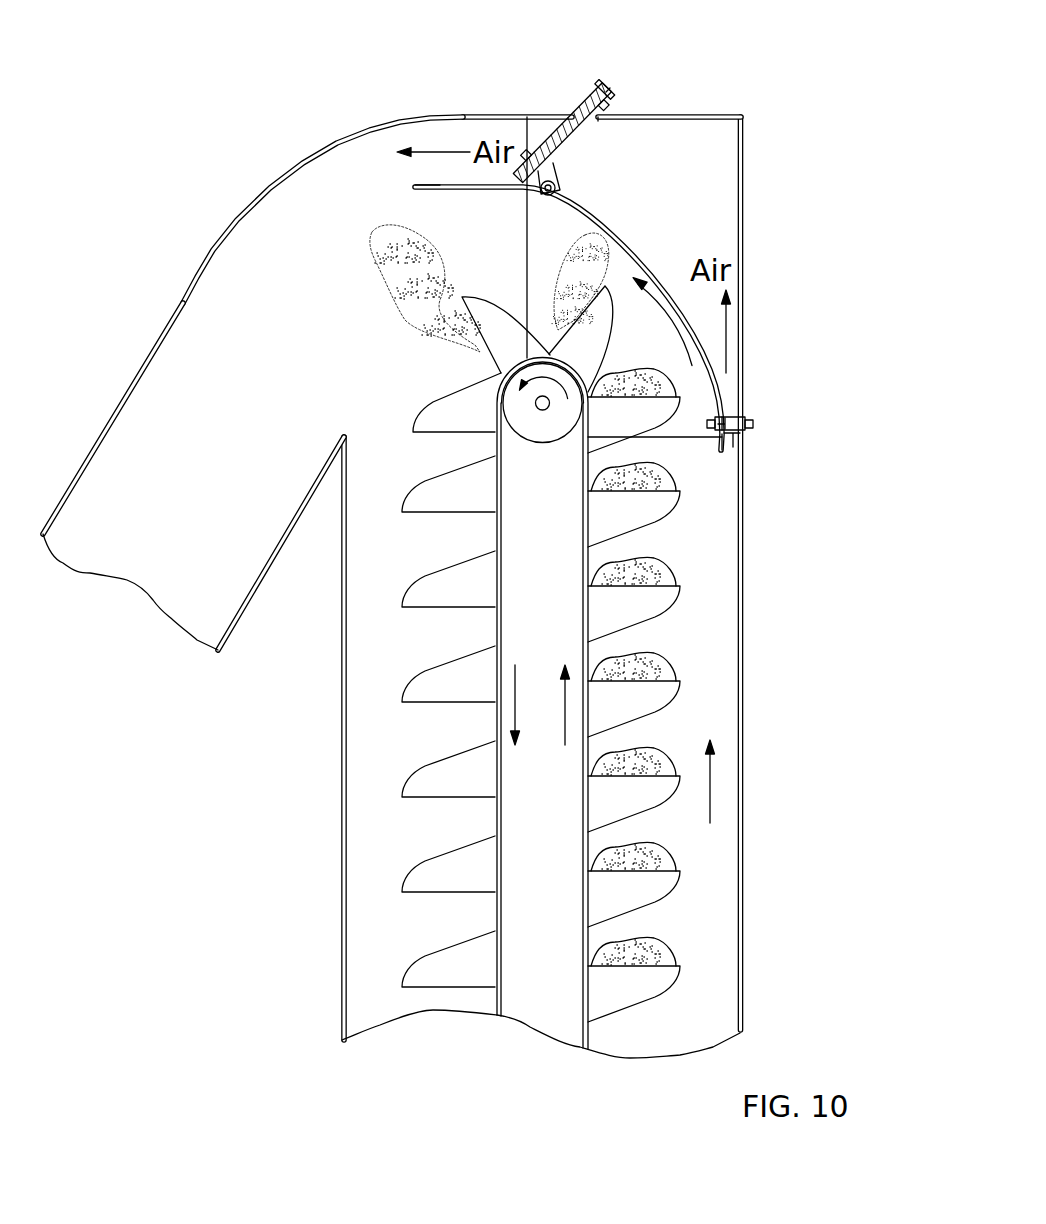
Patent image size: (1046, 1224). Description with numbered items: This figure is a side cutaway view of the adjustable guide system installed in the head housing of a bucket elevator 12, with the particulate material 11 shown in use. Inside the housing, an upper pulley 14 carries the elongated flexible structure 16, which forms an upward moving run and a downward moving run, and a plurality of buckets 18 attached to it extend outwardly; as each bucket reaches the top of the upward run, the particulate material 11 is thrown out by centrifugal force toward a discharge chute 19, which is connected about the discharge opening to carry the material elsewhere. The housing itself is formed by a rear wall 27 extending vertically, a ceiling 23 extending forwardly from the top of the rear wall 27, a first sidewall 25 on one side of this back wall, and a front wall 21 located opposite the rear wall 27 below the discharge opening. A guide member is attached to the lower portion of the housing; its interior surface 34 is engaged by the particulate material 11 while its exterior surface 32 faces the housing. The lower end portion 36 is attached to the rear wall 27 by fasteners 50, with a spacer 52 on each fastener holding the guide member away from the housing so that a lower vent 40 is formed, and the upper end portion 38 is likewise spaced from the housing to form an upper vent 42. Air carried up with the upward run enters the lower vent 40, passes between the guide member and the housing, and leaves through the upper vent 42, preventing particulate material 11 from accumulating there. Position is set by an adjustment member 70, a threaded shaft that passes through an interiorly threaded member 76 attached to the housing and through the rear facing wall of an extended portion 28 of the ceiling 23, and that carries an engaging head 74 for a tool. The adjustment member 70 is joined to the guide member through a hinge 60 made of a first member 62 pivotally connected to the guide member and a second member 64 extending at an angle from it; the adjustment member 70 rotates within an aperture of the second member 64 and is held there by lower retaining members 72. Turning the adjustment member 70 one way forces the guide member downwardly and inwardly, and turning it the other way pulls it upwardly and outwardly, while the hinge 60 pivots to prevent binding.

The particulate material 11 is at (390, 265).
The bucket elevator 12 is at (334, 860).
The upper pulley 14 is at (513, 410).
The elongated flexible structure 16 is at (410, 947).
The buckets 18 is at (665, 612).
The discharge chute 19 is at (127, 388).
The front wall 21 is at (340, 470).
The ceiling 23 is at (703, 116).
The first sidewall 25 is at (718, 152).
The rear wall 27 is at (744, 226).
The extended portion 28 is at (525, 107).
The exterior surface 32 is at (400, 128).
The interior surface 34 is at (493, 313).
The lower end portion 36 is at (721, 452).
The upper end portion 38 is at (413, 187).
The lower vent 40 is at (733, 447).
The upper vent 42 is at (565, 130).
The fasteners 50 is at (753, 424).
The spacer 52 is at (730, 416).
The hinge 60 is at (560, 192).
The first member 62 is at (560, 182).
The second member 64 is at (525, 150).
The adjustment member 70 is at (606, 96).
The lower retaining members 72 is at (553, 165).
The engaging head 74 is at (605, 90).
The interiorly threaded member 76 is at (562, 133).